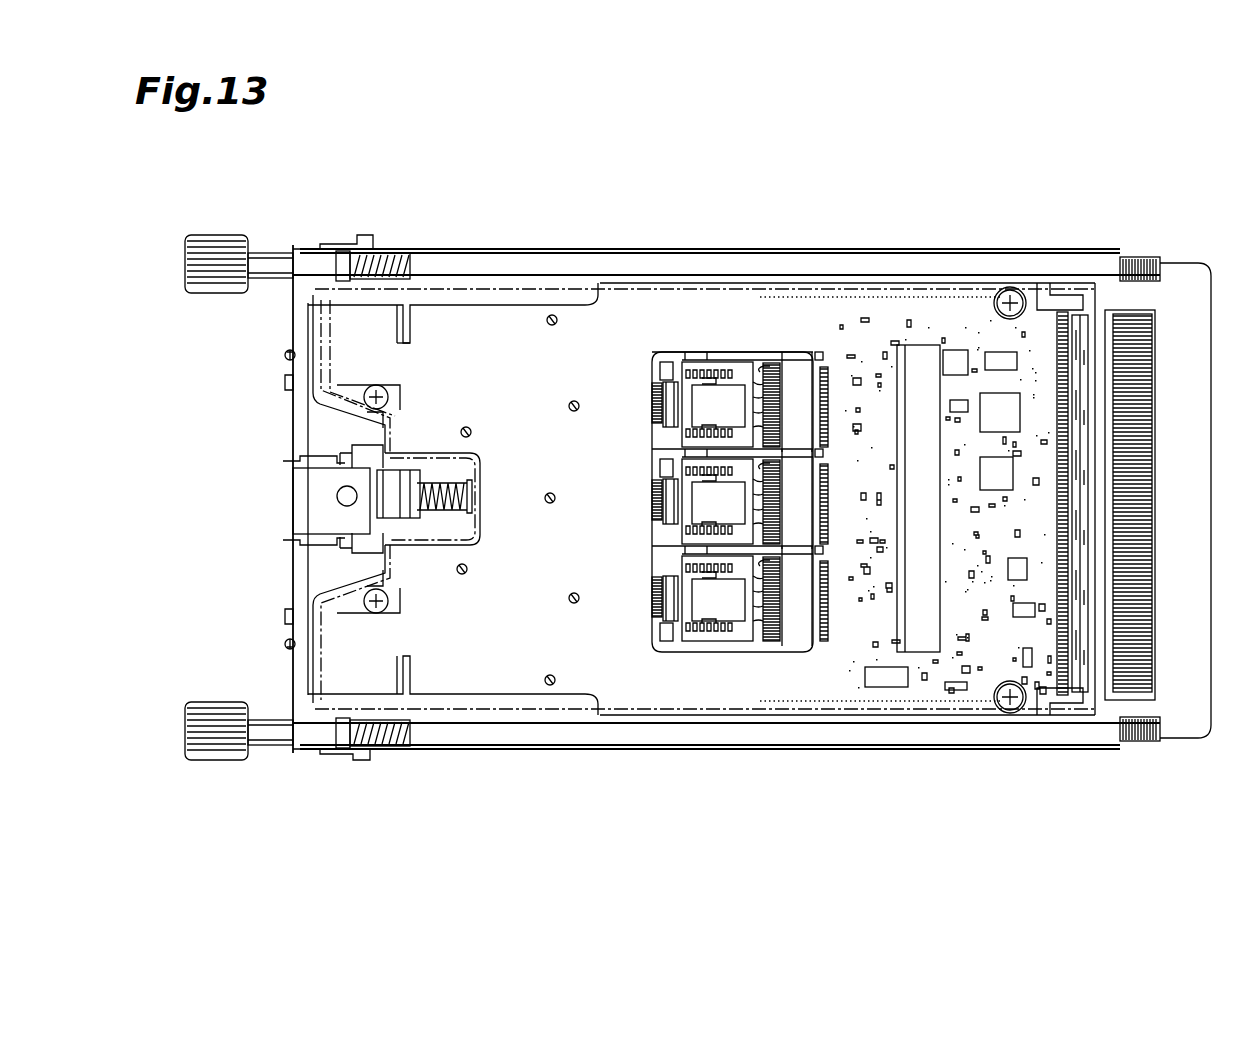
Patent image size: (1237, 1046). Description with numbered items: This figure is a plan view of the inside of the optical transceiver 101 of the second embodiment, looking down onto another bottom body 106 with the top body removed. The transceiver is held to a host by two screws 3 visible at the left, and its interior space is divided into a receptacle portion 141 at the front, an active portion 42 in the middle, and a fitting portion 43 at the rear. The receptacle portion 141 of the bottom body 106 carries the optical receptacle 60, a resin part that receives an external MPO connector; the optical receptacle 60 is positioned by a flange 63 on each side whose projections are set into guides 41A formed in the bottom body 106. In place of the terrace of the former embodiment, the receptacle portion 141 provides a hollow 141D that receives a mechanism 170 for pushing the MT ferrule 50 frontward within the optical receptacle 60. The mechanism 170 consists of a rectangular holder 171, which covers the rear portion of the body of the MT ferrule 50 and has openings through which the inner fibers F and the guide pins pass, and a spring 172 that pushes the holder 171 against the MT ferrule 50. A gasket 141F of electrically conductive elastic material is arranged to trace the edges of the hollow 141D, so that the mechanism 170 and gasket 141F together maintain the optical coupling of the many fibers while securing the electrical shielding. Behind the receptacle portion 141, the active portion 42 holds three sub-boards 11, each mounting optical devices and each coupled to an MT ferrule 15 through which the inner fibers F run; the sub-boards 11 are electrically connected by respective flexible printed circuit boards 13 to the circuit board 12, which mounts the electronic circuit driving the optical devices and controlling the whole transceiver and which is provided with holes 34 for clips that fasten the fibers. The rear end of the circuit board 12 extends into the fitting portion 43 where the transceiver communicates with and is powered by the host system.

The optical transceiver 101 is at (951, 148).
The receptacle portion 141 is at (520, 182).
The active portion 42 is at (1075, 182).
The fitting portion 43 is at (1225, 182).
The screw 3 is at (210, 245).
The MT ferrule 50 is at (400, 475).
The hole 34 is at (552, 314).
The flexible printed circuit board 13 is at (797, 380).
The circuit board 12 is at (840, 318).
The MT ferrule 15 is at (668, 383).
The sub-board 11 is at (735, 470).
The gasket 141F is at (432, 453).
The hollow 141D is at (457, 470).
The guide 41A is at (338, 438).
The flange 63 is at (335, 462).
The optical receptacle 60 is at (312, 503).
The holder 171 is at (412, 545).
The spring 172 is at (437, 517).
The mechanism 170 is at (410, 790).
The bottom body 106 is at (362, 763).
The inner fiber F is at (652, 412).